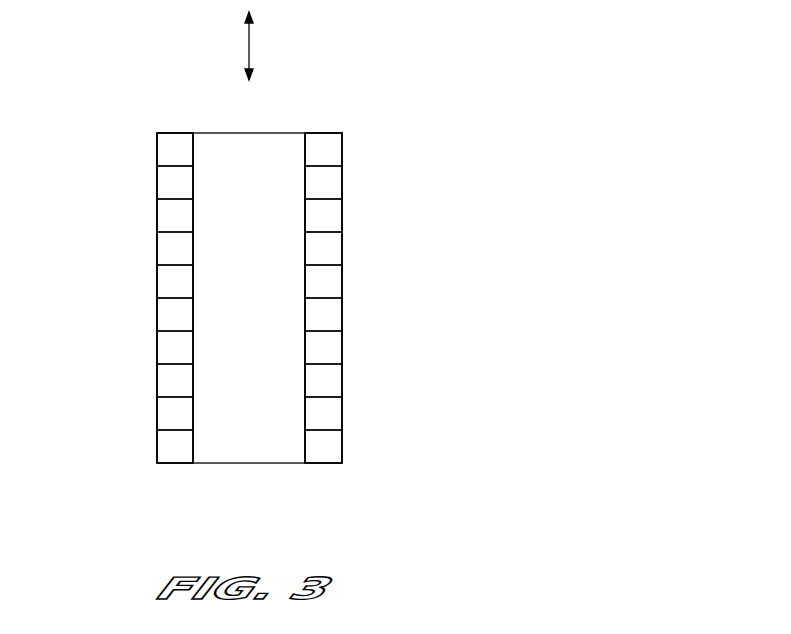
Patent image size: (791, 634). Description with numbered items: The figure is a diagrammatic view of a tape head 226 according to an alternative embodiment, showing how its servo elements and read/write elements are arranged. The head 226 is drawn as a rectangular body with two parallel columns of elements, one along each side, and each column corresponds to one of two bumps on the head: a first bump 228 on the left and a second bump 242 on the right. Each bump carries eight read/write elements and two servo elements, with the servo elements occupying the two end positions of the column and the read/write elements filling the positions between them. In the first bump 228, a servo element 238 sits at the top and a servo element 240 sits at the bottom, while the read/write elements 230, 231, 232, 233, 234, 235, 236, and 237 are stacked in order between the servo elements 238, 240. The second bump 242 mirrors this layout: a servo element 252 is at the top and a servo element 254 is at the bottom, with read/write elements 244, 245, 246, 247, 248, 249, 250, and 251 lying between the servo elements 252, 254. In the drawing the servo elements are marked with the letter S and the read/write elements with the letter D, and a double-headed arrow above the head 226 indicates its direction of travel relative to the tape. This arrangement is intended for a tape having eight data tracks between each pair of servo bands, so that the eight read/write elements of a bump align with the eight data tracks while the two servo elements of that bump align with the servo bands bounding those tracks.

The head 226 is at (292, 115).
The first bump 228 is at (197, 485).
The second bump 242 is at (321, 494).
The servo element 238 is at (157, 150).
The read/write element 230 is at (157, 182).
The read/write element 231 is at (157, 216).
The read/write element 232 is at (157, 248).
The read/write element 233 is at (157, 282).
The read/write element 234 is at (157, 314).
The read/write element 235 is at (157, 348).
The read/write element 236 is at (157, 380).
The read/write element 237 is at (157, 414).
The servo element 240 is at (157, 446).
The servo element 252 is at (342, 150).
The read/write element 244 is at (342, 182).
The read/write element 245 is at (342, 216).
The read/write element 246 is at (342, 248).
The read/write element 247 is at (342, 282).
The read/write element 248 is at (342, 314).
The read/write element 249 is at (342, 348).
The read/write element 250 is at (342, 380).
The read/write element 251 is at (342, 414).
The servo element 254 is at (342, 446).